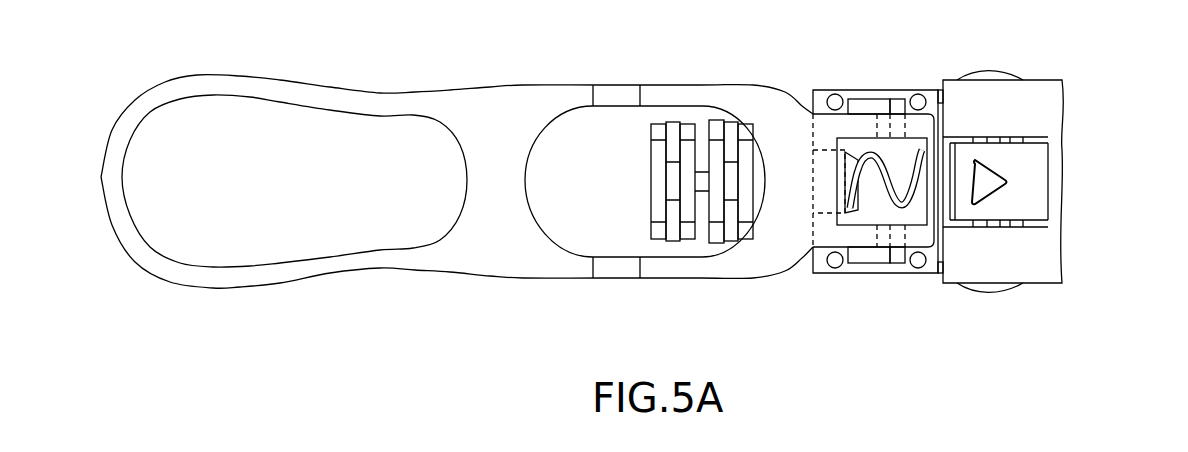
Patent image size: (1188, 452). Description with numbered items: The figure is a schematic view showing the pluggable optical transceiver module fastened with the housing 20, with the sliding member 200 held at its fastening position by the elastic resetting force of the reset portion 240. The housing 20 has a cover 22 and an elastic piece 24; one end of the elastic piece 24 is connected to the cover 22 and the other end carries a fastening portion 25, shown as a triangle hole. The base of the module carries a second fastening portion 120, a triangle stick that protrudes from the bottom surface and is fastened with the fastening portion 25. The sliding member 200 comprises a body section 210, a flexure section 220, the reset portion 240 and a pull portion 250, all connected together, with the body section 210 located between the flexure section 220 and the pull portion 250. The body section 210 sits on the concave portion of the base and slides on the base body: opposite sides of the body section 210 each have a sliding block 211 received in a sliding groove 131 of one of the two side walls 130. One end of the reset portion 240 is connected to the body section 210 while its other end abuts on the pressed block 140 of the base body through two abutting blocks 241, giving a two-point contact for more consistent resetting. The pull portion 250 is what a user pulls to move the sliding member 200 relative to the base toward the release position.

The sliding member 200 is at (140, 85).
The pull portion 250 is at (463, 108).
The body section 210 is at (862, 127).
The side walls 130 is at (827, 93).
The sliding groove 131 is at (868, 263).
The sliding block 211 is at (896, 263).
The pressed block 140 is at (820, 197).
The abutting blocks 241 is at (843, 158).
The reset portion 240 is at (884, 153).
The flexure section 220 is at (943, 165).
The housing 20 is at (1137, 48).
The cover 22 is at (1052, 115).
The elastic piece 24 is at (1007, 158).
The fastening portion 25 is at (985, 163).
The second fastening portion 120 is at (980, 188).